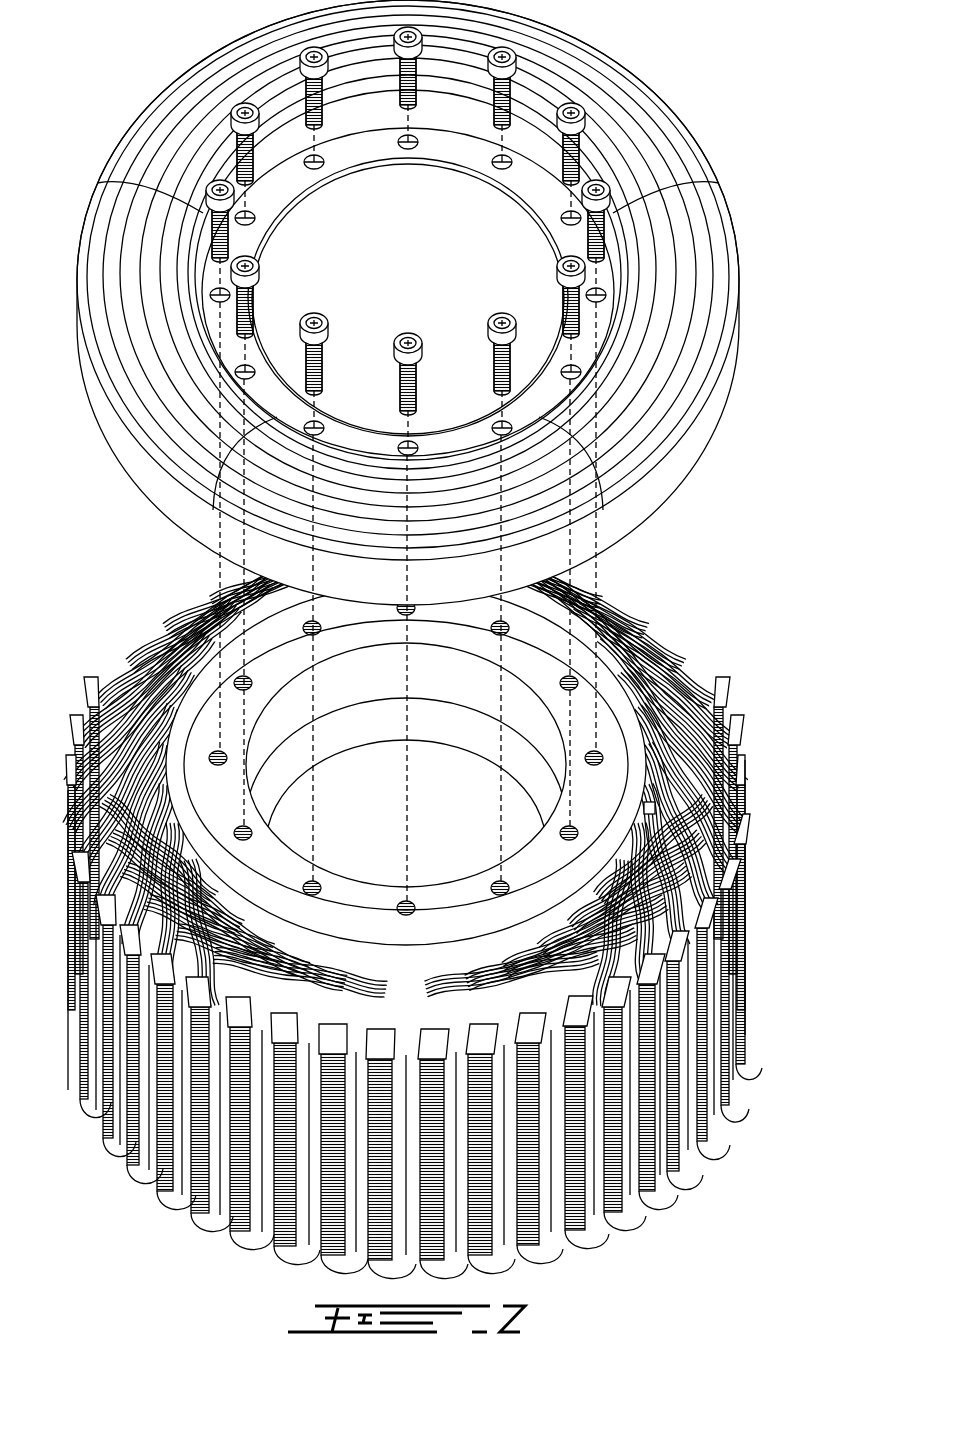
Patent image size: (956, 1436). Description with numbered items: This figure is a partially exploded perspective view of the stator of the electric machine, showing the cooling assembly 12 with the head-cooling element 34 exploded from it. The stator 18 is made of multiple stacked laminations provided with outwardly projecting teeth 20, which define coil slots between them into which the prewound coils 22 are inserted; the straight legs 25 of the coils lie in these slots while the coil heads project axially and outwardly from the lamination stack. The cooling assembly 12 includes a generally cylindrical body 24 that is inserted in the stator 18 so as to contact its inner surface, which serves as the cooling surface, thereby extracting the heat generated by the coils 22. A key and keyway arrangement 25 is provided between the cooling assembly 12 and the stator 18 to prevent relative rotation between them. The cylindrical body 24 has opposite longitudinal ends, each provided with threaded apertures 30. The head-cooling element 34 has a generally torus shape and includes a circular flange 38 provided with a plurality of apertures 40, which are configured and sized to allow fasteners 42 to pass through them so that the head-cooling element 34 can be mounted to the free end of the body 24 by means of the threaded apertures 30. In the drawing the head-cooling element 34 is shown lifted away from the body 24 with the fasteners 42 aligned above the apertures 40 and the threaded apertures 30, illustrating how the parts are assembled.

The cooling assembly 12 is at (444, 902).
The stator 18 is at (447, 976).
The teeth 20 is at (738, 964).
The coils 22 is at (681, 661).
The cylindrical body 24 is at (585, 812).
The key and keyway arrangement 25 is at (652, 806).
The threaded apertures 30 is at (247, 833).
The head-cooling element 34 is at (416, 302).
The circular flange 38 is at (356, 150).
The apertures 40 is at (420, 150).
The fasteners 42 is at (518, 60).